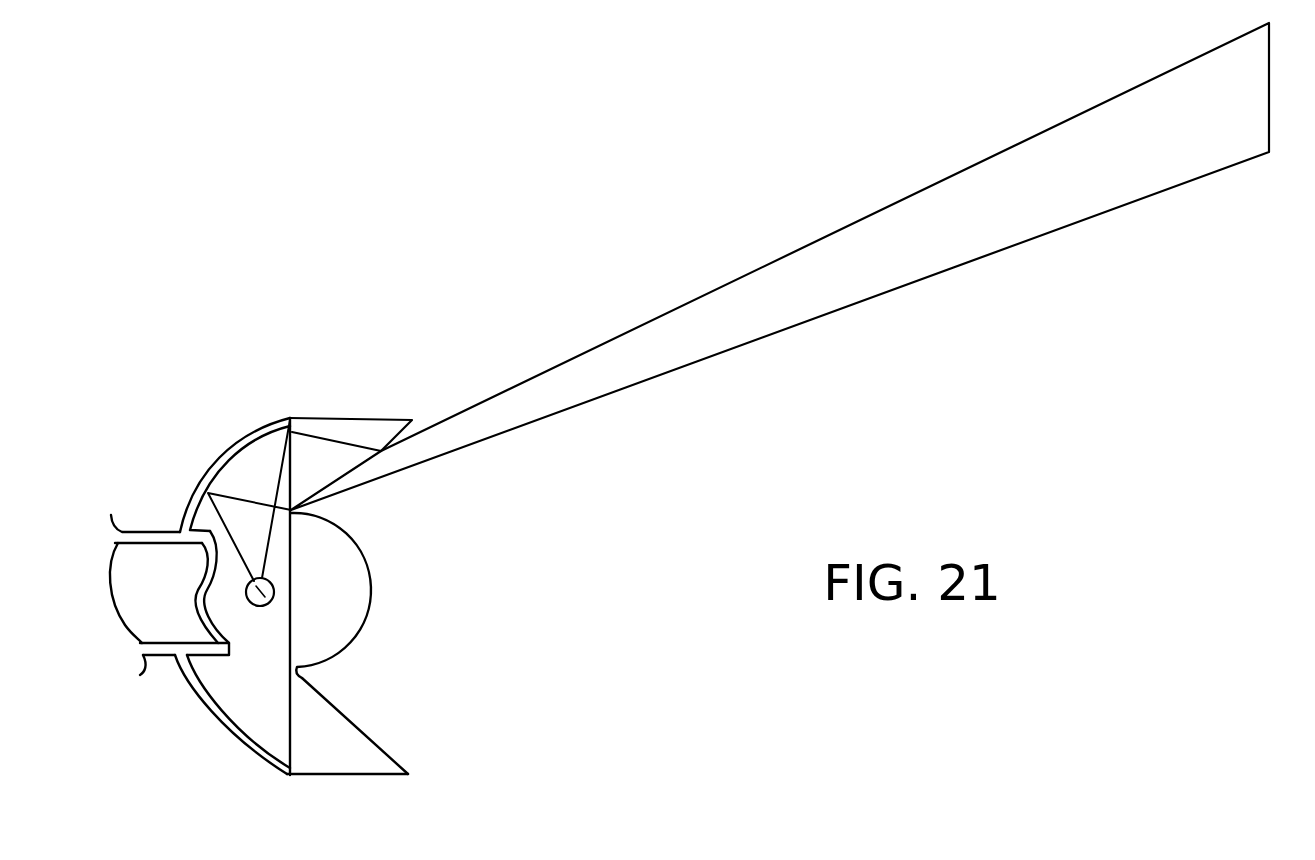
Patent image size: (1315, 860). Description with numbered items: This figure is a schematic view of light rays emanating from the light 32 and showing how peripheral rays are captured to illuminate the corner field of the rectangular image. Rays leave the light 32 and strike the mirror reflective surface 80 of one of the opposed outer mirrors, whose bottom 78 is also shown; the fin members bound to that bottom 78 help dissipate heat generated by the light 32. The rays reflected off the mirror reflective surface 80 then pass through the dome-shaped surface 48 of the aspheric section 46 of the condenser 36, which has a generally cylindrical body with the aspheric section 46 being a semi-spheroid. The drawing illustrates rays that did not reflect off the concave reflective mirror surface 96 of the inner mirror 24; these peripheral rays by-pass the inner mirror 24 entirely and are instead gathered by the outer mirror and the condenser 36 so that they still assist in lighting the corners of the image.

The inner mirror 24 is at (168, 670).
The light 32 is at (267, 607).
The condenser 36 is at (352, 661).
The aspheric section 46 is at (352, 591).
The dome-shaped surface 48 is at (373, 743).
The bottom 78 is at (218, 465).
The mirror reflective surface 80 is at (215, 712).
The concave reflective mirror surface 96 is at (203, 580).